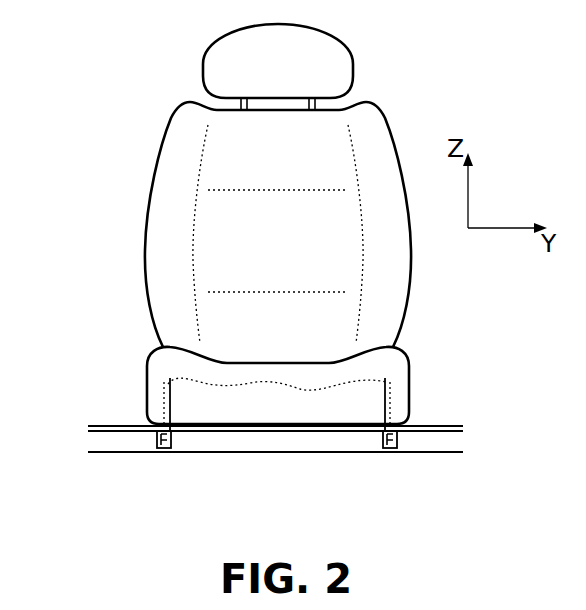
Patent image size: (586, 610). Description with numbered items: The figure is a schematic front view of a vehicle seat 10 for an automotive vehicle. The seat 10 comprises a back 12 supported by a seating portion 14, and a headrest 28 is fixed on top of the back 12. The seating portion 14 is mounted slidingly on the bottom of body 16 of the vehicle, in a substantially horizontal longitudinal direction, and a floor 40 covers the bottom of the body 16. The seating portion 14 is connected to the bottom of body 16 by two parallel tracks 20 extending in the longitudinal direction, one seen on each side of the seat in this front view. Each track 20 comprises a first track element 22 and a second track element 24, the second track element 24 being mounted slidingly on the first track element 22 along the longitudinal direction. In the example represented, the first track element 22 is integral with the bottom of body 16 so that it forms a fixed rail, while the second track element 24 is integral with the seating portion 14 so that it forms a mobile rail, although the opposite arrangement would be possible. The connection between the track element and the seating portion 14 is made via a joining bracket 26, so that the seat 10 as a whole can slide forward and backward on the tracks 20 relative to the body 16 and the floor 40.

The seat 10 is at (424, 101).
The back 12 is at (165, 192).
The seating portion 14 is at (162, 363).
The bottom of body 16 is at (453, 451).
The track 20 is at (128, 417).
The first track element 22 is at (158, 437).
The second track element 24 is at (170, 437).
The joining bracket 26 is at (163, 398).
The headrest 28 is at (222, 62).
The floor 40 is at (453, 426).